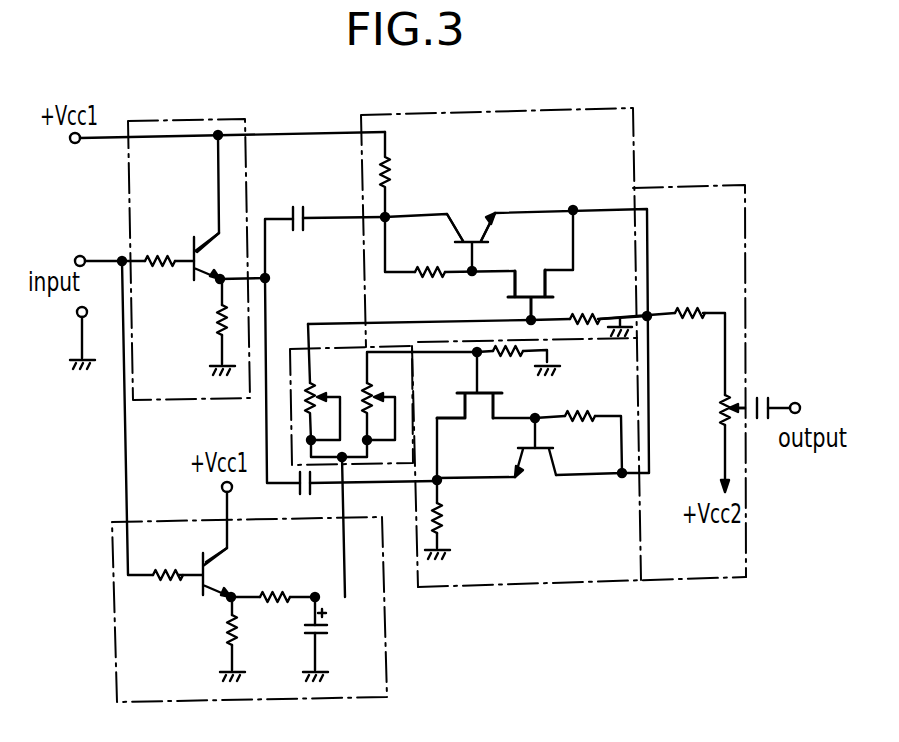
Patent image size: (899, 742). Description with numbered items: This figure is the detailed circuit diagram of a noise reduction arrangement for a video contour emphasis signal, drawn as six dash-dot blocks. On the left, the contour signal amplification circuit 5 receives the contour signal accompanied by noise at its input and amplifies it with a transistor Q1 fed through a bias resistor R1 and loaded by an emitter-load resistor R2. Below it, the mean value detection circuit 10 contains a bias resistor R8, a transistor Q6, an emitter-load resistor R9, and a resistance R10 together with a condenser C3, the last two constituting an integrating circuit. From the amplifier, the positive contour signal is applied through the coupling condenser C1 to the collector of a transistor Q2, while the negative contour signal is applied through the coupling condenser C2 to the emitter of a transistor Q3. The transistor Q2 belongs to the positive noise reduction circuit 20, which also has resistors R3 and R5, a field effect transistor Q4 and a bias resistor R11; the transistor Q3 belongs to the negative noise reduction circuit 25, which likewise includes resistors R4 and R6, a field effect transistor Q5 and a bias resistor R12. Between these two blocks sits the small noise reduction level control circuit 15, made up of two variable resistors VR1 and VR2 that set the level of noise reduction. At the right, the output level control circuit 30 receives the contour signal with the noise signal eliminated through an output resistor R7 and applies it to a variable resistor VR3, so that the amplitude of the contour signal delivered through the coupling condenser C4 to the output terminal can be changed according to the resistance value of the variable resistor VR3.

The contour signal amplification circuit 5 is at (163, 120).
The mean value detection circuit 10 is at (387, 670).
The noise reduction level control circuit 15 is at (298, 347).
The positive noise reduction circuit 20 is at (578, 108).
The negative noise reduction circuit 25 is at (548, 587).
The output level control circuit 30 is at (712, 187).
The bias resistor R1 is at (160, 244).
The emitter-load resistor R2 is at (207, 323).
The resistor R3 is at (398, 174).
The resistor R4 is at (451, 519).
The resistor R5 is at (430, 258).
The resistor R6 is at (580, 401).
The output resistor R7 is at (690, 298).
The bias resistor R8 is at (166, 561).
The emitter-load resistor R9 is at (245, 633).
The resistance R10 is at (277, 580).
The bias resistor R11 is at (607, 304).
The bias resistor R12 is at (506, 366).
The transistor Q1 is at (213, 256).
The transistor Q2 is at (471, 232).
The transistor Q3 is at (535, 478).
The field effect transistor Q4 is at (530, 279).
The field effect transistor Q5 is at (469, 422).
The transistor Q6 is at (225, 572).
The coupling condenser C1 is at (297, 204).
The coupling condenser C2 is at (316, 495).
The condenser C3 is at (328, 629).
The coupling condenser C4 is at (766, 393).
The variable resistor VR1 is at (326, 403).
The variable resistor VR2 is at (382, 403).
The variable resistor VR3 is at (707, 410).